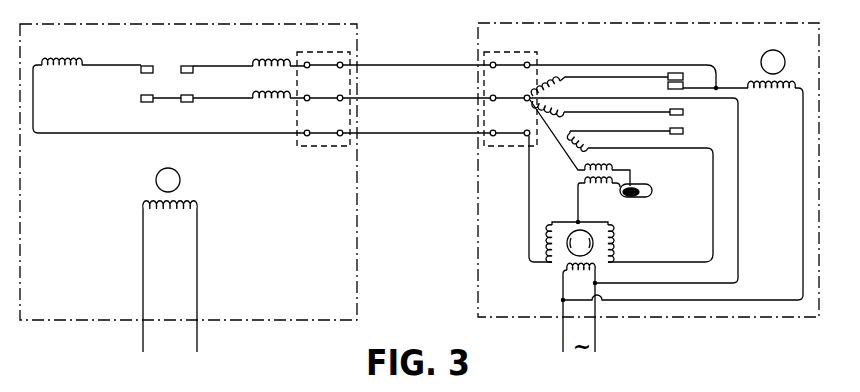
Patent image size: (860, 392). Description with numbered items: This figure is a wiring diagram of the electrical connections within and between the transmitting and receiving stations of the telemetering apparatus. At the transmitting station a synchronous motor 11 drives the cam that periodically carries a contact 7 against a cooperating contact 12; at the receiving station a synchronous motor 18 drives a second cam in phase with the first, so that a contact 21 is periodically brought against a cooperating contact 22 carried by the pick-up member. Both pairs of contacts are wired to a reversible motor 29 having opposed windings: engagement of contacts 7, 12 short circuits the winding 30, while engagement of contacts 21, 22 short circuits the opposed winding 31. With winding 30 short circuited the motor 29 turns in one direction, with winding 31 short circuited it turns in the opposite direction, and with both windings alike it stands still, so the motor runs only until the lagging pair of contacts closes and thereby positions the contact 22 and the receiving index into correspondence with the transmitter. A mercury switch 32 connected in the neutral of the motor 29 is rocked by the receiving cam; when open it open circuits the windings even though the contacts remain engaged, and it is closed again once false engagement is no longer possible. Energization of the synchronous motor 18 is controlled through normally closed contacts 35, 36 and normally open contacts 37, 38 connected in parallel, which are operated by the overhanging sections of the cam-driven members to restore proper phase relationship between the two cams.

The contact 7 is at (141, 100).
The synchronous motor 11 is at (200, 194).
The contact 12 is at (141, 71).
The synchronous motor 18 is at (772, 101).
The contact 21 is at (683, 131).
The contact 22 is at (683, 112).
The reversible motor 29 is at (676, 249).
The winding 30 is at (548, 236).
The opposed winding 31 is at (612, 230).
The mercury switch 32 is at (637, 185).
The normally closed contact 35 is at (668, 86).
The normally closed contact 36 is at (683, 77).
The normally open contact 37 is at (193, 101).
The normally open contact 38 is at (193, 71).